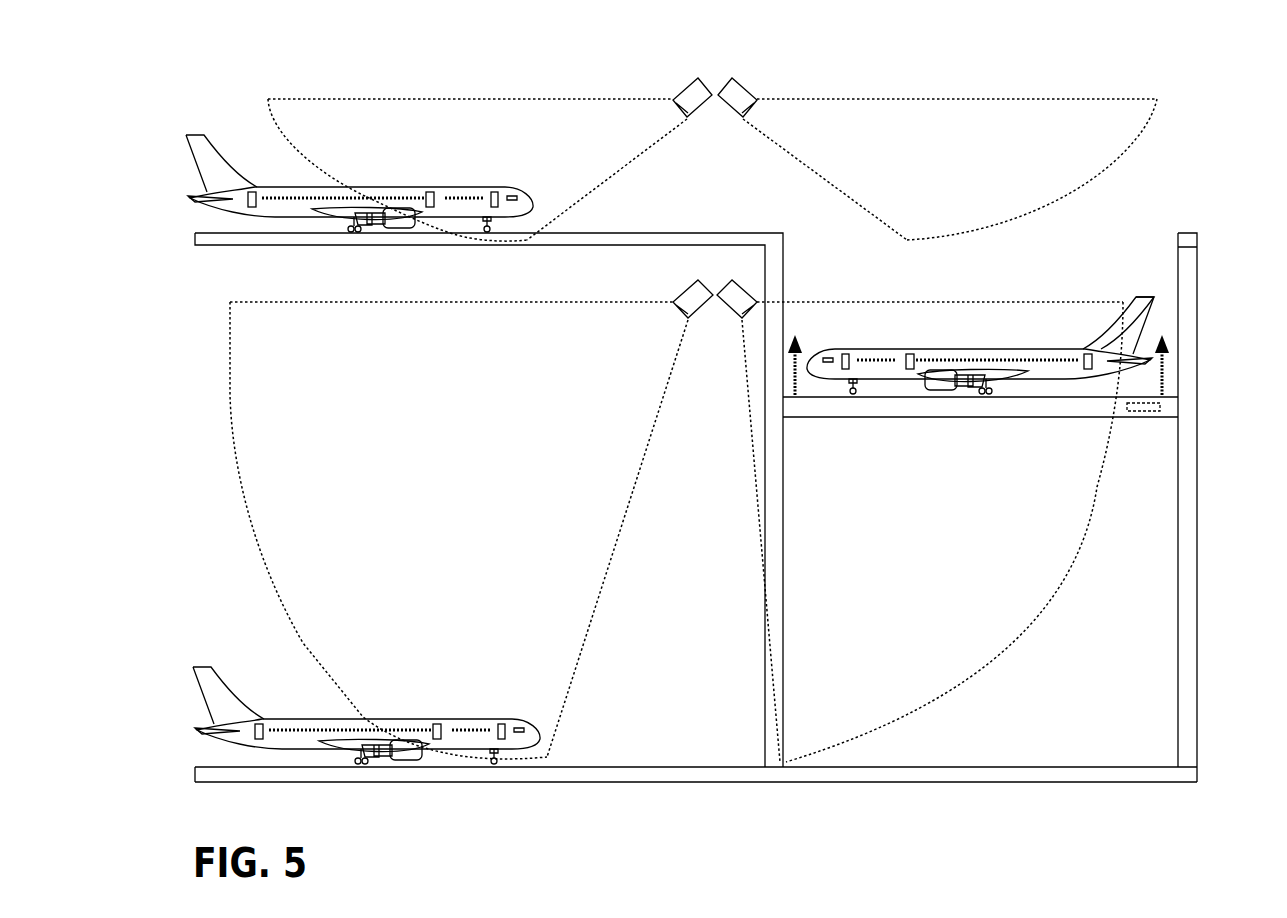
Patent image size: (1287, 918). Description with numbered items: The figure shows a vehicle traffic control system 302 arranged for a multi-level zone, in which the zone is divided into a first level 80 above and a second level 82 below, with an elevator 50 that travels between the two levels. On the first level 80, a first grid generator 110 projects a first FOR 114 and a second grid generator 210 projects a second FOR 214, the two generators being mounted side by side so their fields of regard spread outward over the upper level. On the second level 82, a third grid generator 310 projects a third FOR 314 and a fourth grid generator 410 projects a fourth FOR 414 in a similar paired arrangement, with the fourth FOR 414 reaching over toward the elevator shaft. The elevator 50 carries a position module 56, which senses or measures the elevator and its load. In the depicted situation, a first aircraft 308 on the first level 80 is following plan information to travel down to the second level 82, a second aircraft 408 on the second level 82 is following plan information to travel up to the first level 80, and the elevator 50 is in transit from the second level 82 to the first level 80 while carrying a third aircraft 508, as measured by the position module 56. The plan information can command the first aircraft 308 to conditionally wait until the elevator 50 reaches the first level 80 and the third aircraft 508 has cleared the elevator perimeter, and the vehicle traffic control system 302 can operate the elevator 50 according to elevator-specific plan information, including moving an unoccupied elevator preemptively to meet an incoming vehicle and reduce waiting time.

The elevator 50 is at (1017, 403).
The position module 56 is at (1152, 413).
The first level 80 is at (1144, 201).
The second level 82 is at (1210, 692).
The first grid generator 110 is at (693, 95).
The first FOR 114 is at (619, 143).
The second grid generator 210 is at (738, 93).
The second FOR 214 is at (887, 153).
The vehicle traffic control system 302 is at (989, 76).
The first aircraft 308 is at (197, 148).
The third grid generator 310 is at (693, 295).
The third FOR 314 is at (636, 353).
The second aircraft 408 is at (212, 678).
The fourth grid generator 410 is at (735, 298).
The fourth FOR 414 is at (882, 336).
The third aircraft 508 is at (1138, 307).